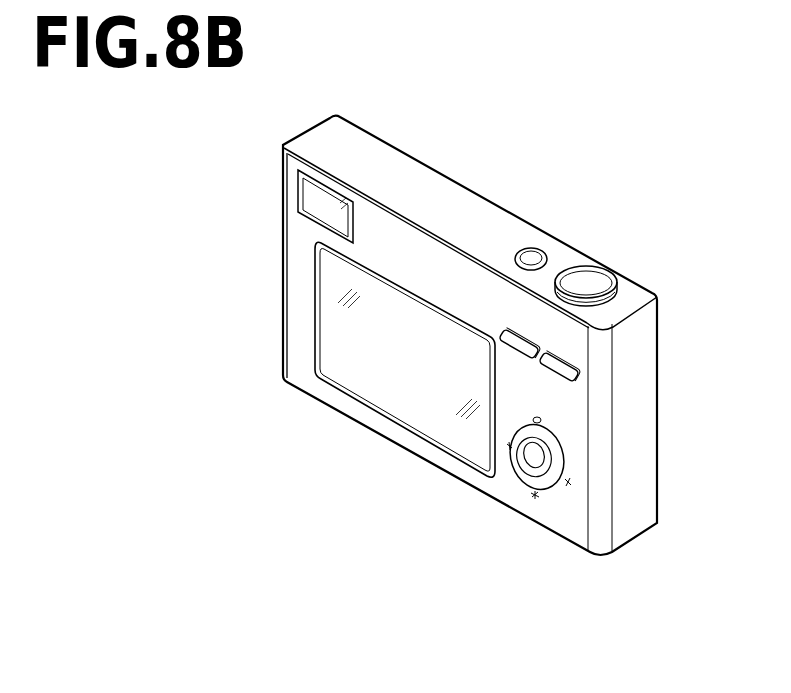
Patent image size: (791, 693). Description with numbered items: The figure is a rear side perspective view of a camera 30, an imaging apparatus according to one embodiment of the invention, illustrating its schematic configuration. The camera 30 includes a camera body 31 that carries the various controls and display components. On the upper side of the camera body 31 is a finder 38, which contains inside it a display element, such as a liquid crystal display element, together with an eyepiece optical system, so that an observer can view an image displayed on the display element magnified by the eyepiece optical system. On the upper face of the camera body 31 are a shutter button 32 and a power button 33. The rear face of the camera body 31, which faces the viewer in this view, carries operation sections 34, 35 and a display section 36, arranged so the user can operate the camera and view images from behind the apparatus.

The camera 30 is at (238, 256).
The camera body 31 is at (645, 442).
The shutter button 32 is at (595, 278).
The power button 33 is at (531, 256).
The operation section 34 is at (580, 388).
The operation section 35 is at (549, 482).
The display section 36 is at (373, 398).
The finder 38 is at (315, 200).